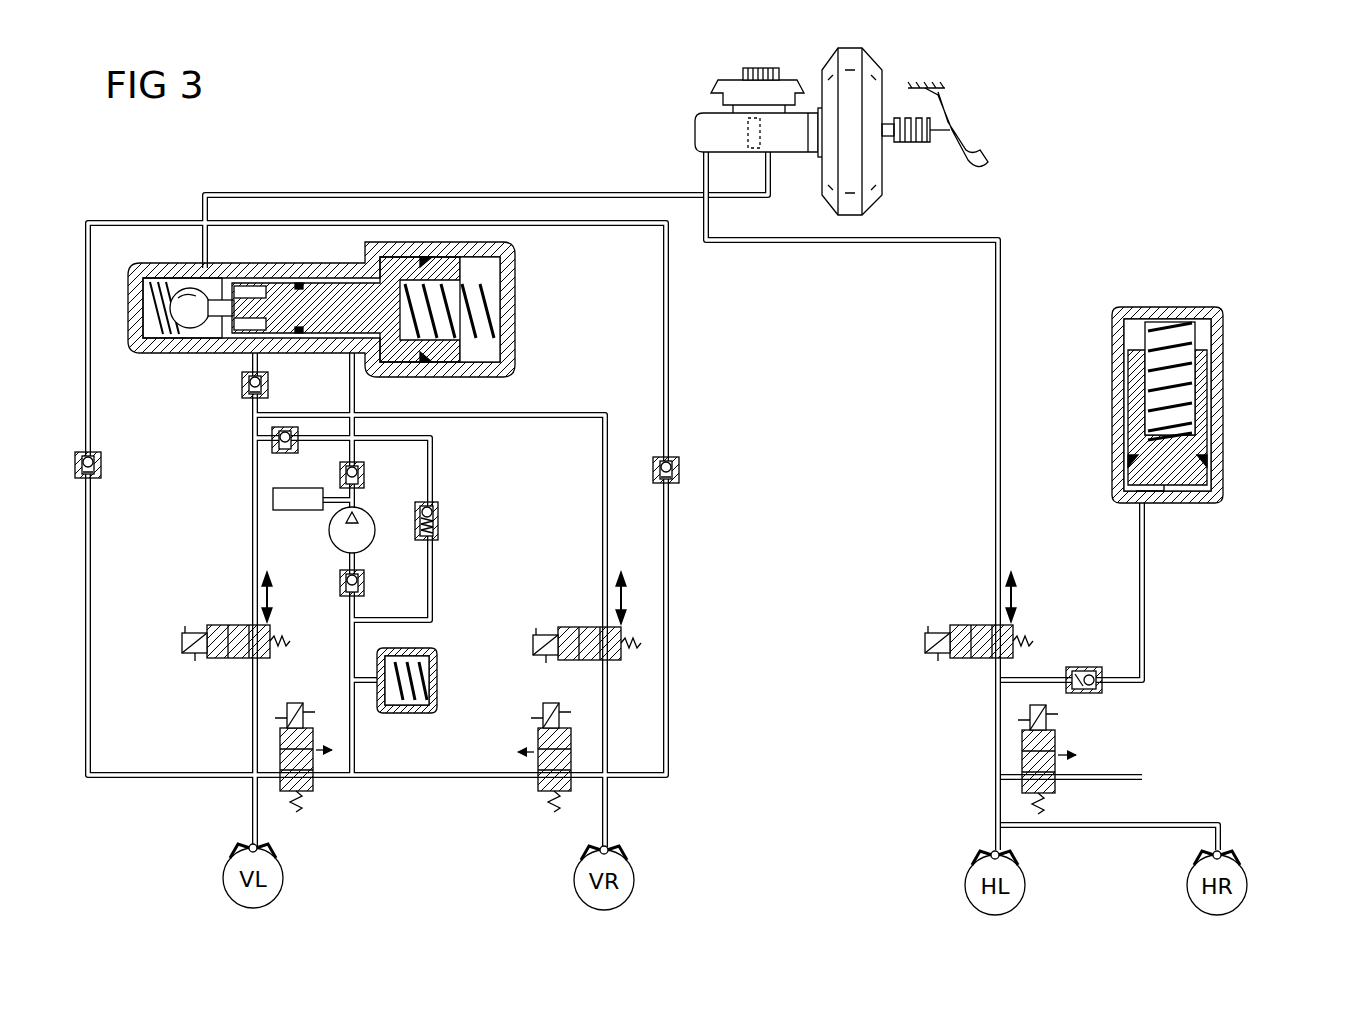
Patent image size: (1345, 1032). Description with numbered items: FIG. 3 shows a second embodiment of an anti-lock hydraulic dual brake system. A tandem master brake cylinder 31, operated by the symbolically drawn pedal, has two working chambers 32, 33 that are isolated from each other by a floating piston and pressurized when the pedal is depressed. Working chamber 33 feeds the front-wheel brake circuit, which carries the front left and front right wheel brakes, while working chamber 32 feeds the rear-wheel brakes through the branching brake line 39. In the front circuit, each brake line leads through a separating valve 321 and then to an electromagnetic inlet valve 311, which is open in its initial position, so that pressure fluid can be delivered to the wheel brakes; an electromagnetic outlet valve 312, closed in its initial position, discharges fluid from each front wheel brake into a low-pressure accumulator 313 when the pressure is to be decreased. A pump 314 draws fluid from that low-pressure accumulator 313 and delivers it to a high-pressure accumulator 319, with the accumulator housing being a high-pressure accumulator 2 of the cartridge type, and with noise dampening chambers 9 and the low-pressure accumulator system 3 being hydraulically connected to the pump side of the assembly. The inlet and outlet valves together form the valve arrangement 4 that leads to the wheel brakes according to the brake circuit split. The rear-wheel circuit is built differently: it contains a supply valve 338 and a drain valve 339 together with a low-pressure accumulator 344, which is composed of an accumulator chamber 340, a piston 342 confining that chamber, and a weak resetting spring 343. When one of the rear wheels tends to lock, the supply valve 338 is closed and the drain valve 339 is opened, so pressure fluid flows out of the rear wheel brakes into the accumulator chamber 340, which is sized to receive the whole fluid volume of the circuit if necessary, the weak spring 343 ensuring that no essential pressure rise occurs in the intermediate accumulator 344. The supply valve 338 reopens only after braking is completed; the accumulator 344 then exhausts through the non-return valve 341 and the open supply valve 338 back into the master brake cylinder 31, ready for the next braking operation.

The high-pressure accumulator 2 is at (366, 329).
The low-pressure accumulator 3 is at (383, 570).
The valve arrangement 4 is at (703, 636).
The noise dampening chamber 9 is at (305, 487).
The tandem master brake cylinder 31 is at (802, 130).
The working chamber 32 is at (747, 130).
The working chamber 33 is at (798, 130).
The brake line 39 is at (1003, 410).
The inlet valve 311 is at (216, 660).
The outlet valve 312 is at (318, 788).
The low-pressure accumulator 313 is at (438, 702).
The pump 314 is at (340, 532).
The high-pressure accumulator 319 is at (530, 300).
The separating valve 321 is at (192, 366).
The supply valve 338 is at (958, 625).
The drain valve 339 is at (1058, 735).
The accumulator chamber 340 is at (1218, 423).
The non-return valve 341 is at (1096, 642).
The piston 342 is at (1202, 416).
The resetting spring 343 is at (1192, 322).
The low-pressure accumulator 344 is at (1232, 472).